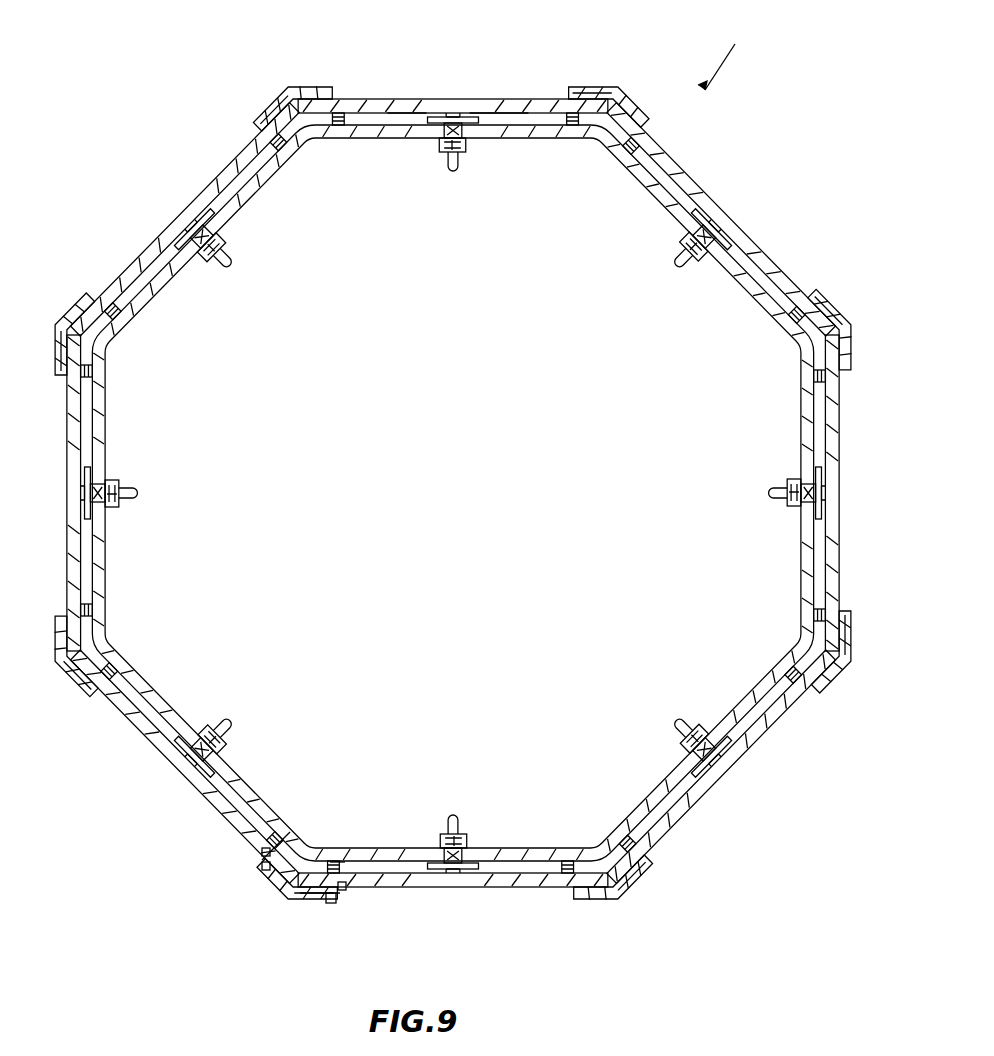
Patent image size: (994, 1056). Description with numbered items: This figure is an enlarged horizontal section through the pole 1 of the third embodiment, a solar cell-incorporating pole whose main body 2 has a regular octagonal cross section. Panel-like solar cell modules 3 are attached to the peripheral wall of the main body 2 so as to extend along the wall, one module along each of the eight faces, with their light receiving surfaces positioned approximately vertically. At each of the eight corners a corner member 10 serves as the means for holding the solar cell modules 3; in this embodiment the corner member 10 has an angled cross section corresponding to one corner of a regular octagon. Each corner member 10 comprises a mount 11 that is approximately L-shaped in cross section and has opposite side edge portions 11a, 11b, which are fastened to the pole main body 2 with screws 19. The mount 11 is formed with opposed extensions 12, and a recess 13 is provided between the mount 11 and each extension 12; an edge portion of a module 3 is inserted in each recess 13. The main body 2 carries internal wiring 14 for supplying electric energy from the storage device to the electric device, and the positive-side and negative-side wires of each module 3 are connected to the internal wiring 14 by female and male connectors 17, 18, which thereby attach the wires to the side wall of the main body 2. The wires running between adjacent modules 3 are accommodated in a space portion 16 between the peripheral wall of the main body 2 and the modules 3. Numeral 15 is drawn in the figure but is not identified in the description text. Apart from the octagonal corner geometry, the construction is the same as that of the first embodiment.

The pole 1 is at (725, 53).
The main body 2 is at (110, 556).
The solar cell module 3 is at (491, 99).
The corner member 10 is at (292, 100).
The mount 11 is at (318, 860).
The side edge portion 11a is at (276, 827).
The side edge portion 11b is at (360, 850).
The extension 12 is at (262, 868).
The recess 13 is at (262, 854).
The internal wiring 14 is at (672, 262).
The mounting plate 15 is at (717, 215).
The space portion 16 is at (745, 250).
The female connector 17 is at (698, 263).
The male connector 18 is at (704, 208).
The screw 19 is at (286, 840).